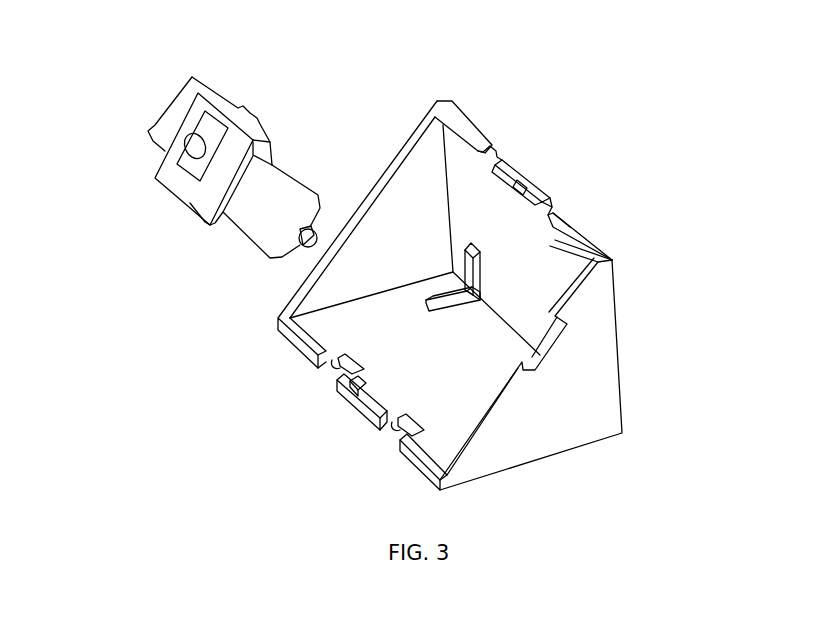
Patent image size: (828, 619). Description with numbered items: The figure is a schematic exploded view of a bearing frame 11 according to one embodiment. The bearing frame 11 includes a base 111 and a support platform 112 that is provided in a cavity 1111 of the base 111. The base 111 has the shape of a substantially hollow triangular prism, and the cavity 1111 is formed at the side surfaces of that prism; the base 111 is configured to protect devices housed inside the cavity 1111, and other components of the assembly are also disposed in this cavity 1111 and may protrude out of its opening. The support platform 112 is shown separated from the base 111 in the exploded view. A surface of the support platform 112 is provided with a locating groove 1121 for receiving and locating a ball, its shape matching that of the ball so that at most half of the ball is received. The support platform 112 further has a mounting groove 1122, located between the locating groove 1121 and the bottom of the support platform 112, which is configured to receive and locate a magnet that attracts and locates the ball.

The bearing frame 11 is at (410, 38).
The base 111 is at (597, 343).
The cavity 1111 is at (513, 298).
The support platform 112 is at (250, 213).
The locating groove 1121 is at (193, 142).
The mounting groove 1122 is at (240, 187).